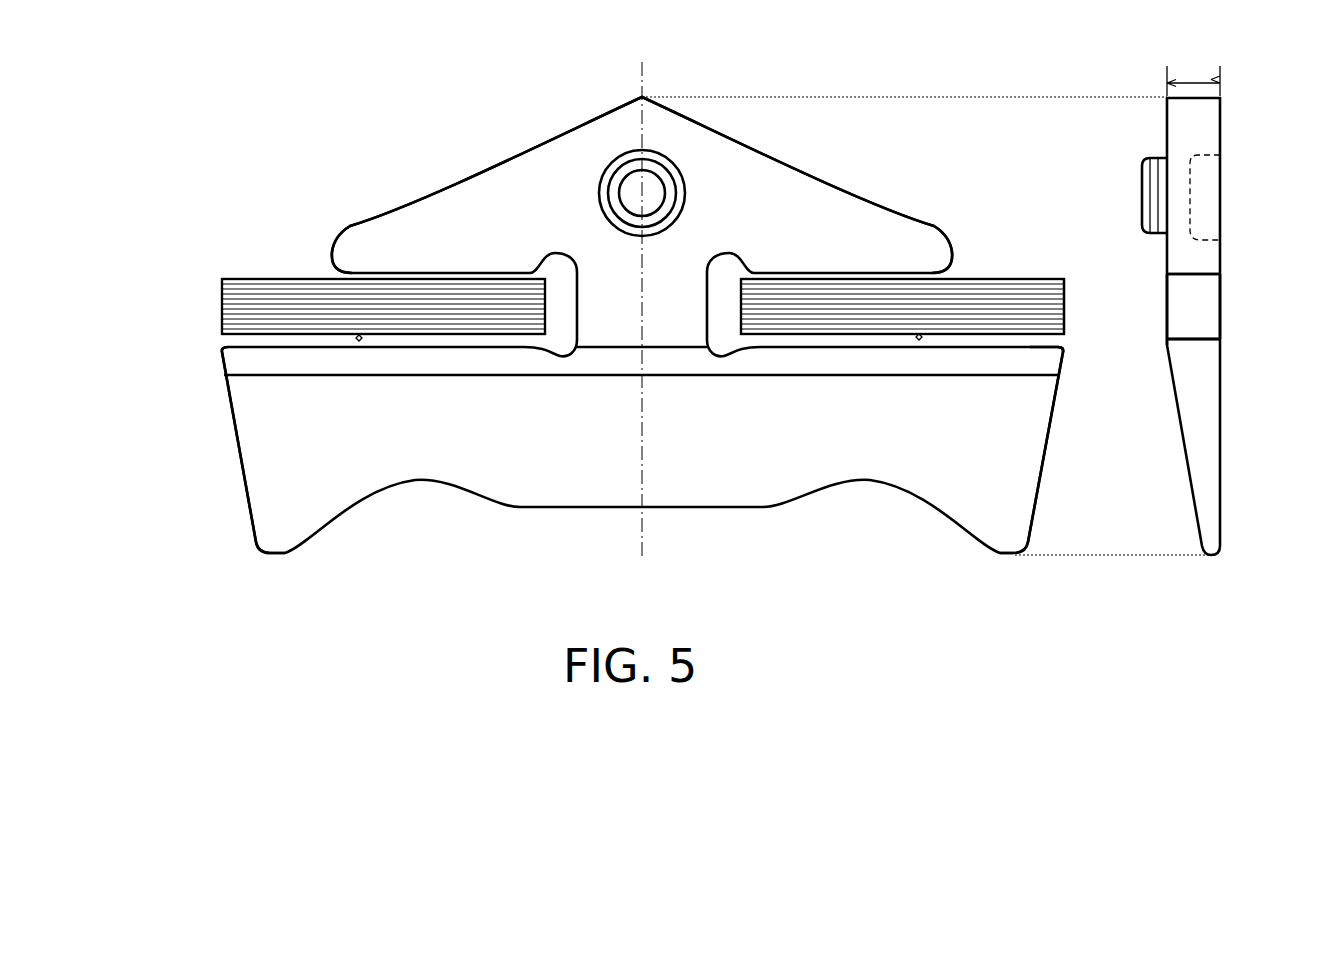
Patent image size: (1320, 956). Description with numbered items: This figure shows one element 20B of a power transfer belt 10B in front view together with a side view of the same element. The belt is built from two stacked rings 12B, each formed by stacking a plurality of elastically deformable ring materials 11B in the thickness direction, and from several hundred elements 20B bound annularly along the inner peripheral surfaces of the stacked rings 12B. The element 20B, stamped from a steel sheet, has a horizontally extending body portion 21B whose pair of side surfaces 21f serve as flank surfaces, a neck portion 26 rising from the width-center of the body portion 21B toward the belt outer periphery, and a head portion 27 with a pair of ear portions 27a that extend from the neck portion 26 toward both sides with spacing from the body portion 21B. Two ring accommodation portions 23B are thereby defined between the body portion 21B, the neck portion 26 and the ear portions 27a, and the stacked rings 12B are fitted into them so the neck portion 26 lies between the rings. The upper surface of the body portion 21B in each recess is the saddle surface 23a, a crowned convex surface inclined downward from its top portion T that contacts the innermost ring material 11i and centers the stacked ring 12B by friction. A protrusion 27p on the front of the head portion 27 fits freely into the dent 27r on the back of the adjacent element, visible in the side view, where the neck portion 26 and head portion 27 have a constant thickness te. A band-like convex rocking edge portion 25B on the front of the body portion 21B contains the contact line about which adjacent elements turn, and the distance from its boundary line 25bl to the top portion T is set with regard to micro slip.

The power transfer belt 10B is at (202, 315).
The ring material 11B is at (1067, 318).
The innermost ring material 11i is at (1067, 330).
The stacked ring 12B is at (254, 267).
The element 20B is at (447, 184).
The body portion 21B is at (838, 465).
The side surface 21f is at (245, 490).
The ring accommodation portion 23B is at (561, 336).
The saddle surface 23a is at (272, 328).
The rocking edge portion 25B is at (597, 358).
The boundary line 25bl is at (1167, 345).
The neck portion 26 is at (673, 307).
The head portion 27 is at (575, 165).
The ear portion 27a is at (352, 245).
The protrusion 27p is at (658, 192).
The dent 27r is at (1212, 175).
The top portion T is at (362, 338).
The thickness te is at (1193, 75).